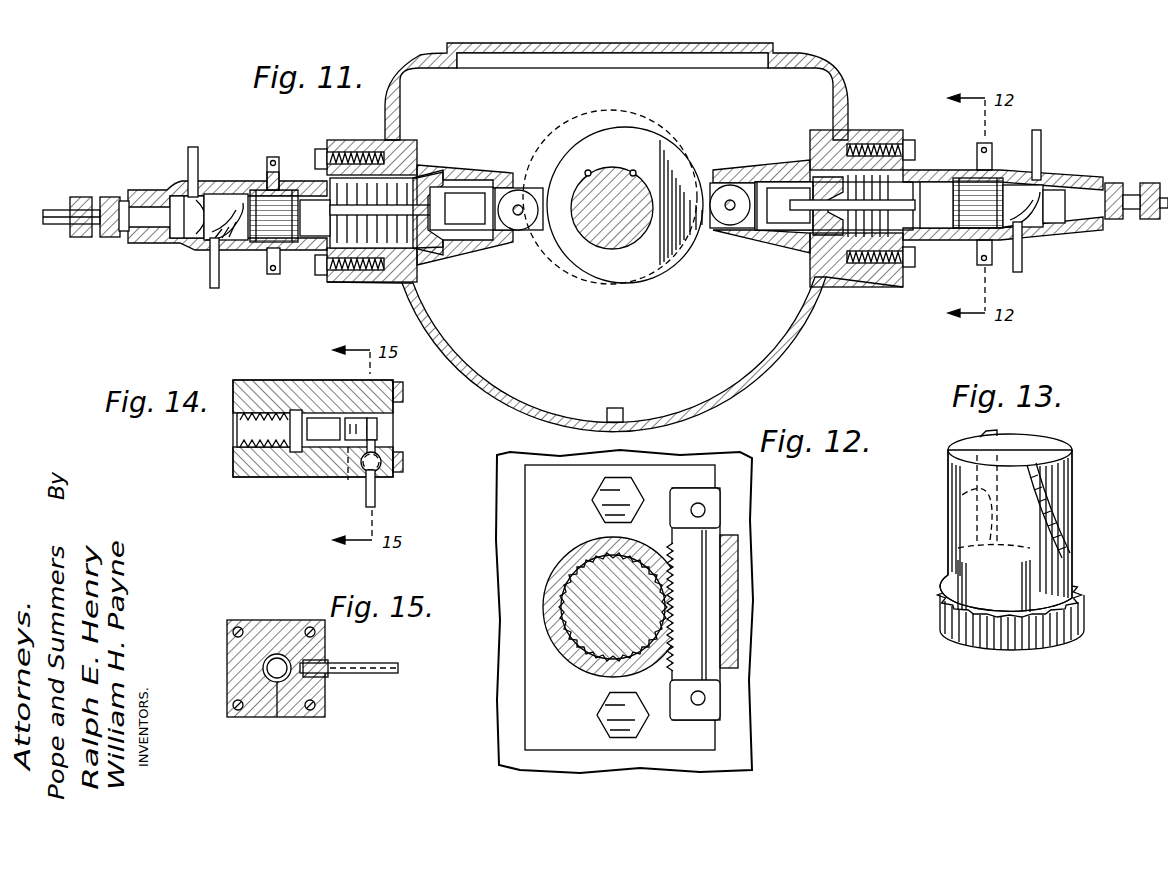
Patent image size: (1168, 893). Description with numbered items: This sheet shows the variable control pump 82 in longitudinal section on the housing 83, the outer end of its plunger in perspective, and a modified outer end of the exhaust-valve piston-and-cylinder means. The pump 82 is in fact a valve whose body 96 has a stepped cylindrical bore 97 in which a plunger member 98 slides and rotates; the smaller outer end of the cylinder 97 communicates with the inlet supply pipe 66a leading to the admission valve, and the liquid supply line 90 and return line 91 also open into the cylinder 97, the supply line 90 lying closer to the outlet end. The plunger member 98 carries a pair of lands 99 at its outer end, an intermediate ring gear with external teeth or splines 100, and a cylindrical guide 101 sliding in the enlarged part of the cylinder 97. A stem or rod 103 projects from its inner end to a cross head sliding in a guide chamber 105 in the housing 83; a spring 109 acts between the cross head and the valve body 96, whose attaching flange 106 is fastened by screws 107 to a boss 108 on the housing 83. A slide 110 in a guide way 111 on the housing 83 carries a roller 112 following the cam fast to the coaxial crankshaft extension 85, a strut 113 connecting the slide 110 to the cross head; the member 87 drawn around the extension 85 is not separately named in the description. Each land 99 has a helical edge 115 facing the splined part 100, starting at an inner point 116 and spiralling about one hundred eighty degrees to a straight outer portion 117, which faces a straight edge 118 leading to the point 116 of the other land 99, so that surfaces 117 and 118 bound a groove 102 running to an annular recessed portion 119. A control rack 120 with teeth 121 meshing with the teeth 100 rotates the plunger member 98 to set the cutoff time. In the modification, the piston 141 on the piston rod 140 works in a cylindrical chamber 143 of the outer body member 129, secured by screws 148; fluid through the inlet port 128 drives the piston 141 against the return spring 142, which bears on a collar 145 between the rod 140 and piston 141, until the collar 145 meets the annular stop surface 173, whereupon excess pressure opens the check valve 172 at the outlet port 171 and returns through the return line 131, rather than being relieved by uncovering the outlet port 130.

In FIG. 11, the inlet supply pipe 66a is at (55, 227).
In FIG. 11, the variable control pump 82 is at (243, 182).
In FIG. 11, the housing 83 is at (410, 66).
In FIG. 12, the housing 83 is at (500, 568).
In FIG. 11, the coaxial extension 85 is at (592, 222).
In FIG. 11, the gear 87 is at (600, 145).
In FIG. 11, the inlet pipe 90 is at (187, 153).
In FIG. 11, the return pipe 91 is at (210, 279).
In FIG. 11, the body 96 is at (220, 194).
In FIG. 12, the body 96 is at (570, 655).
In FIG. 11, the stepped cylindrical bore 97 is at (176, 190).
In FIG. 12, the stepped cylindrical bore 97 is at (565, 636).
In FIG. 11, the plunger member 98 is at (248, 240).
In FIG. 12, the plunger member 98 is at (572, 578).
In FIG. 13, the plunger member 98 is at (942, 573).
In FIG. 11, the lands 99 is at (238, 194).
In FIG. 13, the lands 99 is at (947, 500).
In FIG. 11, the external teeth or splines 100 is at (290, 190).
In FIG. 12, the external teeth or splines 100 is at (572, 580).
In FIG. 13, the external teeth or splines 100 is at (943, 613).
In FIG. 11, the cylindrical guide 101 is at (326, 208).
In FIG. 11, the groove 102 is at (182, 232).
In FIG. 13, the groove 102 is at (995, 432).
In FIG. 11, the stem or rod 103 is at (340, 214).
In FIG. 11, the guide chamber 105 is at (420, 178).
In FIG. 11, the attaching flange 106 is at (333, 140).
In FIG. 12, the attaching flange 106 is at (525, 504).
In FIG. 11, the screws 107 is at (320, 150).
In FIG. 12, the screws 107 is at (595, 486).
In FIG. 11, the boss 108 is at (365, 145).
In FIG. 11, the spring 109 is at (398, 252).
In FIG. 11, the slide 110 is at (472, 244).
In FIG. 11, the guide way 111 is at (500, 186).
In FIG. 11, the roller 112 is at (518, 232).
In FIG. 11, the strut 113 is at (462, 193).
In FIG. 13, the helical edge 115 is at (1070, 561).
In FIG. 13, the inner point 116 is at (993, 548).
In FIG. 13, the outer portion 117 is at (1045, 492).
In FIG. 13, the edge 118 is at (1030, 524).
In FIG. 11, the annular recessed portion 119 is at (252, 194).
In FIG. 13, the annular recessed portion 119 is at (1068, 572).
In FIG. 11, the control rack 120 is at (274, 157).
In FIG. 12, the control rack 120 is at (722, 518).
In FIG. 11, the teeth 121 is at (281, 258).
In FIG. 12, the teeth 121 is at (683, 541).
In FIG. 14, the inlet port 128 is at (376, 428).
In FIG. 14, the outer body member 129 is at (295, 480).
In FIG. 15, the outer body member 129 is at (237, 618).
In FIG. 14, the outlet port 130 is at (348, 480).
In FIG. 14, the return line 131 is at (376, 505).
In FIG. 15, the return line 131 is at (390, 663).
In FIG. 14, the piston rod 140 is at (237, 435).
In FIG. 14, the piston 141 is at (323, 429).
In FIG. 15, the piston 141 is at (279, 655).
In FIG. 14, the return spring 142 is at (240, 421).
In FIG. 14, the cylindrical chamber 143 is at (378, 433).
In FIG. 15, the cylindrical chamber 143 is at (282, 711).
In FIG. 14, the collar 145 is at (295, 410).
In FIG. 14, the screws 148 is at (403, 388).
In FIG. 15, the screws 148 is at (238, 711).
In FIG. 14, the outlet port 171 is at (376, 449).
In FIG. 14, the check valve 172 is at (380, 474).
In FIG. 15, the check valve 172 is at (330, 678).
In FIG. 14, the annular stop surface 173 is at (296, 447).